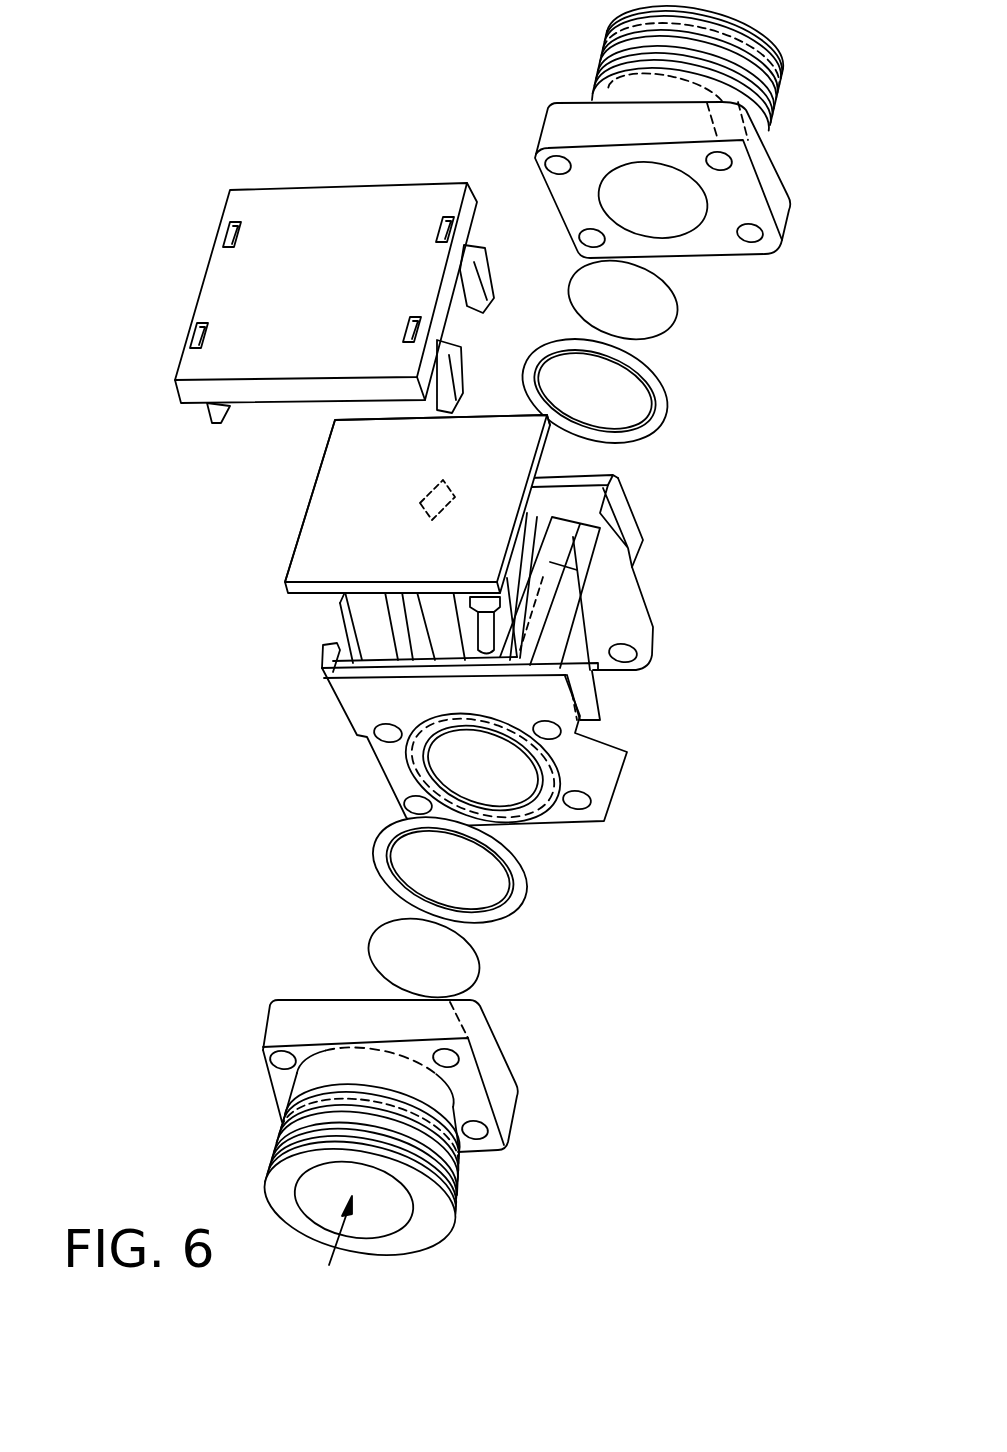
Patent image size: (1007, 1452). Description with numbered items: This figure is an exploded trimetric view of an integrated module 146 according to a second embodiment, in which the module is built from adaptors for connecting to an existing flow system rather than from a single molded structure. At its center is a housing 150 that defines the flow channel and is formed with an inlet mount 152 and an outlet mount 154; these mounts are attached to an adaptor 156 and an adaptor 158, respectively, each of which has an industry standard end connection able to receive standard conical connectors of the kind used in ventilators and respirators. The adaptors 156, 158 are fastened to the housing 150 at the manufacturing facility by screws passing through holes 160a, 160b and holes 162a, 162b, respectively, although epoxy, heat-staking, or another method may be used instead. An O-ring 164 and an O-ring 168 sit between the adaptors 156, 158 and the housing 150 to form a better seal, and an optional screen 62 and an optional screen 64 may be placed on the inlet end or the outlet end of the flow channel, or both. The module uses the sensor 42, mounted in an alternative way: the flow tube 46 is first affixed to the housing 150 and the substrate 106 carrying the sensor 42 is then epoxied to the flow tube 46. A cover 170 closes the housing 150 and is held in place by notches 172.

The outlet mount 154 is at (752, 18).
The adaptor 158 is at (780, 155).
The screw mounting holes 162a is at (590, 236).
The screen 64 is at (680, 308).
The O-ring 168 is at (668, 380).
The cover 170 is at (230, 285).
The notches 172 is at (447, 377).
The substrate 106 is at (340, 518).
The sensor 42 is at (428, 484).
The housing 150 is at (645, 608).
The flow tube 46 is at (455, 617).
The screw mounting holes 162b is at (628, 655).
The screw mounting holes 160b is at (416, 800).
The integrated module 146 is at (258, 728).
The O-ring 164 is at (528, 868).
The screen 62 is at (482, 960).
The adaptor 156 is at (500, 1047).
The screw mounting holes 160a is at (277, 1073).
The inlet mount 152 is at (443, 1220).